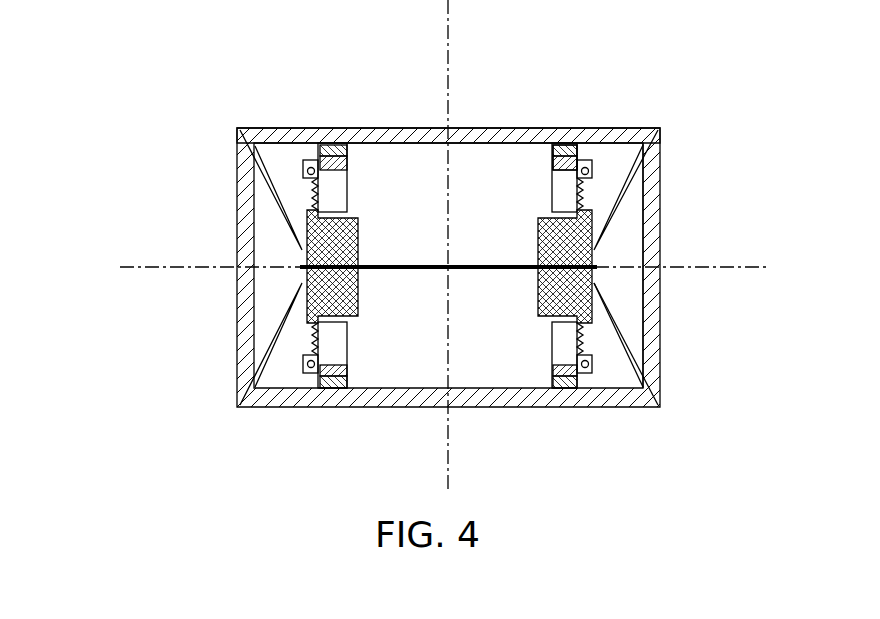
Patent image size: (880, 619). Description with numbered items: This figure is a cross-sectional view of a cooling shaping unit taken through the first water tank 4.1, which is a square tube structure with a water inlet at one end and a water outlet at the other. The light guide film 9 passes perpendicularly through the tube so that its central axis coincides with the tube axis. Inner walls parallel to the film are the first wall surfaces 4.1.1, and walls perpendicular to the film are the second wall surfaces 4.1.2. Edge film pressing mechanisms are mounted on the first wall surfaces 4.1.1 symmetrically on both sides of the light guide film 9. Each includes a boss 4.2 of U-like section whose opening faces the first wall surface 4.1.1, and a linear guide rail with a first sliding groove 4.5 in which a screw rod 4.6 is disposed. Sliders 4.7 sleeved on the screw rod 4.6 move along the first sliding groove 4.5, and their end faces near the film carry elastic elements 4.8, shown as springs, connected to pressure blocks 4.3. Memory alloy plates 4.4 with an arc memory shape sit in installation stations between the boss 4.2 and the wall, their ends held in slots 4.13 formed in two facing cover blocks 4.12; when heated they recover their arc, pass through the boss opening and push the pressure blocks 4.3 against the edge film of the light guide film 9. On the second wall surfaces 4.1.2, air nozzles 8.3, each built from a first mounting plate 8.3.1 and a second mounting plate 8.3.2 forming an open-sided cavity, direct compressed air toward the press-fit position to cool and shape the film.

The first water tank 4.1 is at (240, 129).
The first wall surface 4.1.1 is at (372, 128).
The second wall surface 4.1.2 is at (300, 250).
The boss 4.2 is at (550, 183).
The pressure block 4.3 is at (538, 230).
The memory alloy plate 4.4 is at (536, 113).
The first sliding groove 4.5 is at (322, 150).
The screw rod 4.6 is at (305, 170).
The slider 4.7 is at (590, 183).
The elastic element 4.8 is at (582, 203).
The cover block 4.12 is at (550, 147).
The slot 4.13 is at (560, 150).
The light guide film 9 is at (295, 265).
The air nozzle 8.3 is at (640, 328).
The first mounting plate 8.3.1 is at (622, 300).
The second mounting plate 8.3.2 is at (597, 285).